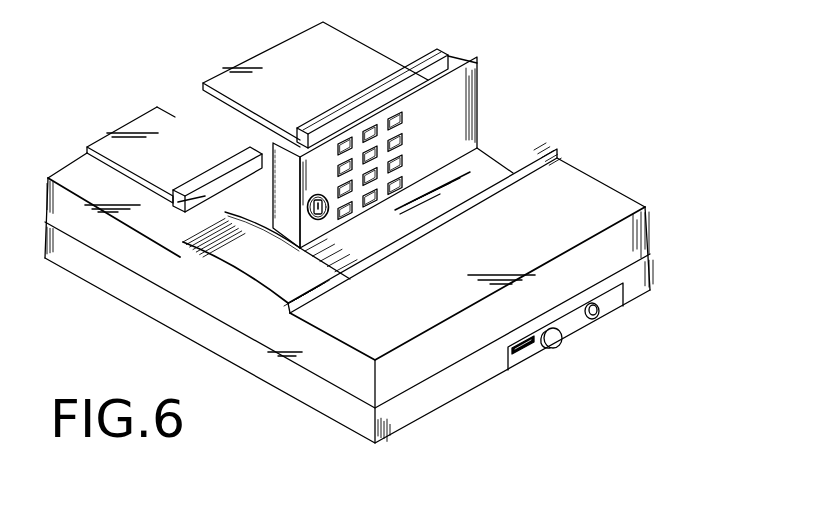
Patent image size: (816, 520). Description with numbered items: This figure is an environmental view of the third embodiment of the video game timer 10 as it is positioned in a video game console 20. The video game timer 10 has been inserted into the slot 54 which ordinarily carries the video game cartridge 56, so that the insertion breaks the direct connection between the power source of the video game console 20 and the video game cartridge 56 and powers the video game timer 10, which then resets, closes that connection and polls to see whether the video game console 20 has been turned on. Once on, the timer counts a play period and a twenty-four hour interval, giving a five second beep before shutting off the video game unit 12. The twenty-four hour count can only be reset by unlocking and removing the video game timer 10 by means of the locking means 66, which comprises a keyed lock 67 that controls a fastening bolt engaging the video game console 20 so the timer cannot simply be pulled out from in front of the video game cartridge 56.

The video game timer 10 is at (499, 61).
The video game unit 12 is at (634, 181).
The video game console 20 is at (538, 134).
The slot 54 is at (301, 249).
The video game cartridge 56 is at (446, 50).
The locking means 66 is at (308, 205).
The keyed lock 67 is at (326, 218).